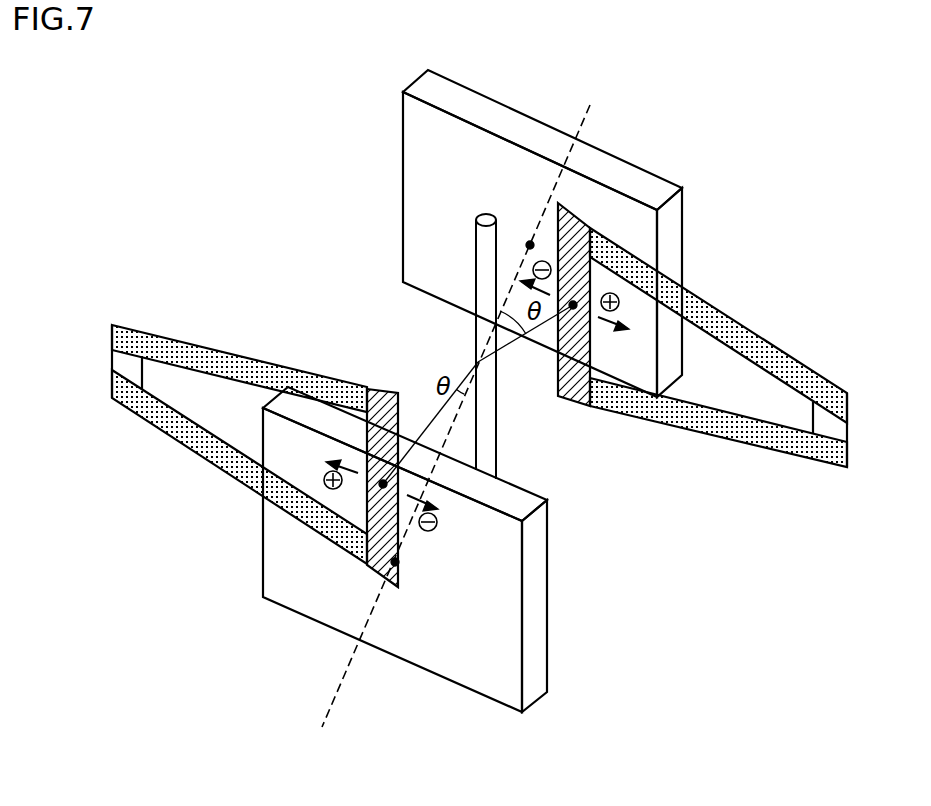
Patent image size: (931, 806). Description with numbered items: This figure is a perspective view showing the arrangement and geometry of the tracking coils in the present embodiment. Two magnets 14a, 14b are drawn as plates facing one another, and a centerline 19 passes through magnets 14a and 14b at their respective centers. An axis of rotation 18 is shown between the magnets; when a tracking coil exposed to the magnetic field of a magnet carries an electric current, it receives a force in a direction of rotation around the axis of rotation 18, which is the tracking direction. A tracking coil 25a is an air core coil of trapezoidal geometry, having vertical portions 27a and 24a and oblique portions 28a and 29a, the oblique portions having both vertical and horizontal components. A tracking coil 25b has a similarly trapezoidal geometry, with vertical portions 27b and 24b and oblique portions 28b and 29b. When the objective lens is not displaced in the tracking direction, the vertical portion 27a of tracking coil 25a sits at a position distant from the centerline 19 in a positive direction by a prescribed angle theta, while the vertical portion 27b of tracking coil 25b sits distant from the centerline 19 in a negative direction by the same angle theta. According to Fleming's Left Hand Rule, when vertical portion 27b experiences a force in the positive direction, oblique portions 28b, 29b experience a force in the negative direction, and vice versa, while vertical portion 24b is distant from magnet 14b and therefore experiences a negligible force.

The magnet 14a is at (610, 170).
The magnet 14b is at (505, 655).
The axis of rotation 18 is at (473, 228).
The centerline 19 is at (343, 677).
The vertical portion 24a is at (828, 420).
The vertical portion 24b is at (127, 360).
The tracking coil 25a is at (725, 390).
The tracking coil 25b is at (243, 423).
The vertical portion 27a is at (575, 393).
The vertical portion 27b is at (400, 402).
The oblique portion 28a is at (723, 327).
The oblique portion 28b is at (342, 382).
The oblique portion 29a is at (668, 420).
The oblique portion 29b is at (210, 463).